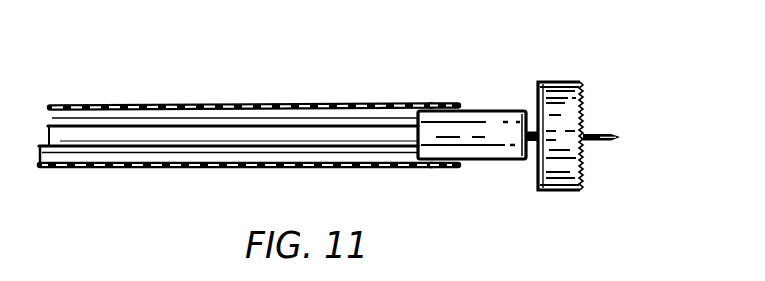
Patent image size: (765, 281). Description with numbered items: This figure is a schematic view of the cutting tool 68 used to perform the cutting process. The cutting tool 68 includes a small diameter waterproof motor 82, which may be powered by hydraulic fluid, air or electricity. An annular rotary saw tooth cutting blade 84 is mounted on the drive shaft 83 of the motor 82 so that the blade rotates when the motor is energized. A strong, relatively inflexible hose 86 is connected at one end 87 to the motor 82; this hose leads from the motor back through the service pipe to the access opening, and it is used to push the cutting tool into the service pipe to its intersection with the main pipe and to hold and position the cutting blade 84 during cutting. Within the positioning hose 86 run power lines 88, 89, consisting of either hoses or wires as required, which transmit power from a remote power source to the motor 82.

The cutting tool 68 is at (620, 40).
The waterproof motor 82 is at (484, 162).
The drive shaft 83 is at (598, 143).
The annular rotary saw tooth cutting blade 84 is at (584, 110).
The hose 86 is at (222, 106).
The end of hose 87 is at (439, 102).
The power line 88 is at (102, 127).
The power line 89 is at (133, 151).